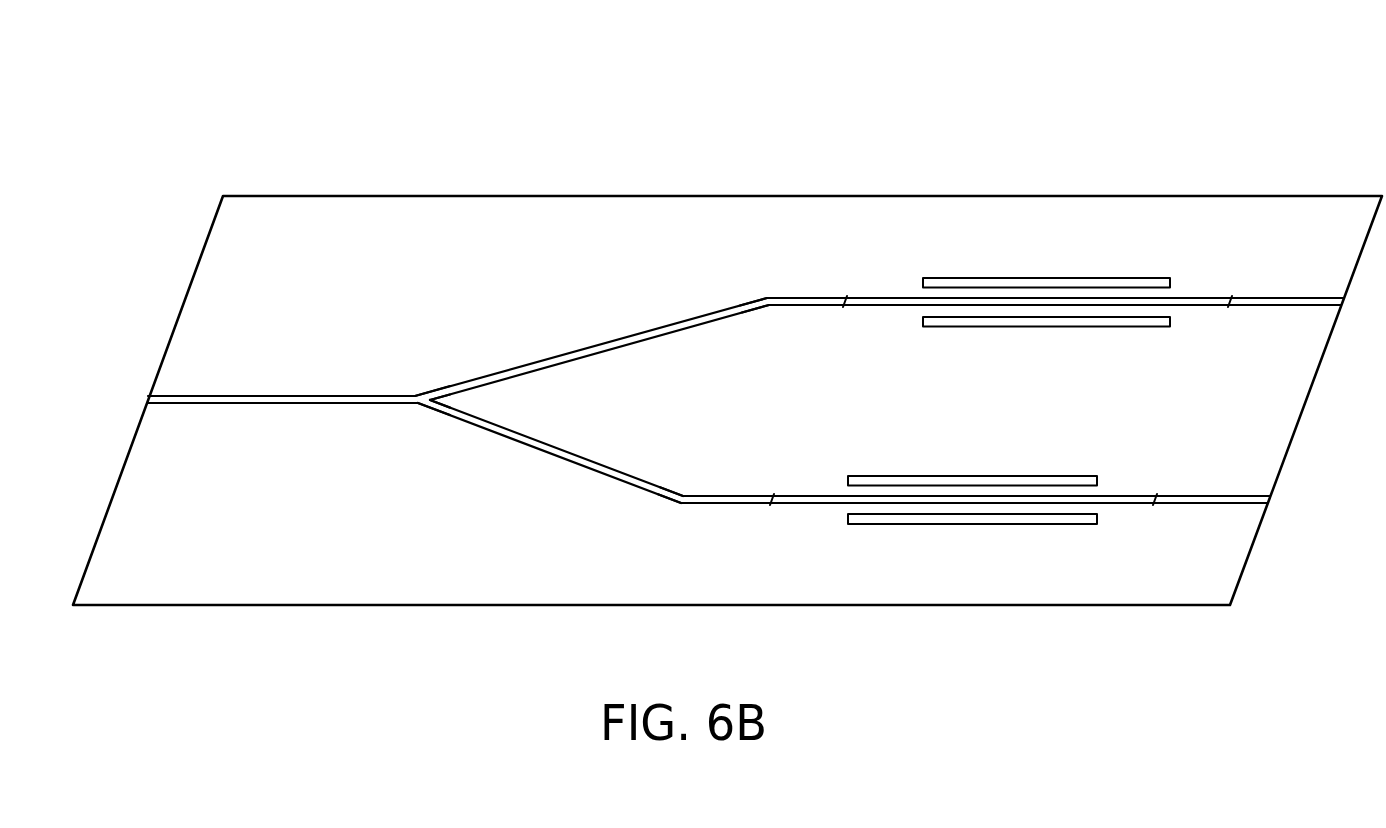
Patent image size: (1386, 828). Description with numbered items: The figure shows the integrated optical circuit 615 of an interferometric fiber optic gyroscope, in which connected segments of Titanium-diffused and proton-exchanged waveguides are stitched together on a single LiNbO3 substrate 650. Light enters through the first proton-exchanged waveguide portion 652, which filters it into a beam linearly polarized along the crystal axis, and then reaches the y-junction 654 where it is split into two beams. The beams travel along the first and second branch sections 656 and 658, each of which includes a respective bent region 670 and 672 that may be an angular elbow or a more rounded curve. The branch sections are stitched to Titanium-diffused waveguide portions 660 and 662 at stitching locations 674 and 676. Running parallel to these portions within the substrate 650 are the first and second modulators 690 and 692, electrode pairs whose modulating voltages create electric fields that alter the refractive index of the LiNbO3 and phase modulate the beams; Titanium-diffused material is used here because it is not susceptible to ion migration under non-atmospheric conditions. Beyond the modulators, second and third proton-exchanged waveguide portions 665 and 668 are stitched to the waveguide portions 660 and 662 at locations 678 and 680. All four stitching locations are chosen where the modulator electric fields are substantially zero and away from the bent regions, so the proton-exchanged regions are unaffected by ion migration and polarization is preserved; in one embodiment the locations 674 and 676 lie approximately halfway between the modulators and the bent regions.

The integrated optical circuit 615 is at (920, 104).
The substrate 650 is at (235, 242).
The first proton-exchanged waveguide portion 652 is at (258, 405).
The y-junction 654 is at (417, 407).
The first branch section 656 is at (615, 340).
The second branch section 658 is at (573, 463).
The Titanium-diffused waveguide portion 660 is at (877, 296).
The Titanium-diffused waveguide portion 662 is at (798, 507).
The second proton-exchanged waveguide portion 665 is at (1290, 296).
The third proton-exchanged waveguide portion 668 is at (1190, 507).
The bent region 670 is at (752, 291).
The bent region 672 is at (670, 510).
The stitching location 674 is at (845, 320).
The stitching location 676 is at (768, 484).
The stitching location 678 is at (1225, 320).
The stitching location 680 is at (1153, 484).
The first modulator 690 is at (1031, 266).
The second modulator 692 is at (945, 535).